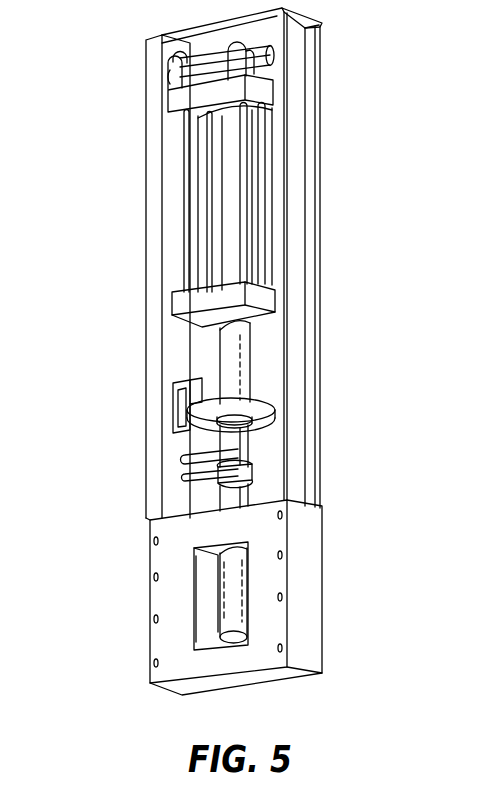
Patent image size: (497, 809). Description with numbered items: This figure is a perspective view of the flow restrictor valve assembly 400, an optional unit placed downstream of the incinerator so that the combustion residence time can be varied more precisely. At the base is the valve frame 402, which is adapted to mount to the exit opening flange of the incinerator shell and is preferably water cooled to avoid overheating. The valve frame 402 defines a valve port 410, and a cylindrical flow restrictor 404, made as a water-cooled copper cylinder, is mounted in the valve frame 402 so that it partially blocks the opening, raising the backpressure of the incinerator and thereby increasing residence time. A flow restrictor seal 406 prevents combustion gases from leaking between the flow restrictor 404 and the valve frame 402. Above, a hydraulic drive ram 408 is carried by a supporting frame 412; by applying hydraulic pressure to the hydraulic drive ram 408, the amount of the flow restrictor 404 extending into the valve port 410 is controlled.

The flow restrictor valve assembly 400 is at (352, 666).
The valve frame 402 is at (308, 627).
The flow restrictor 404 is at (235, 573).
The flow restrictor seal 406 is at (250, 543).
The hydraulic drive ram 408 is at (258, 198).
The valve port 410 is at (207, 595).
The frame 412 is at (320, 83).